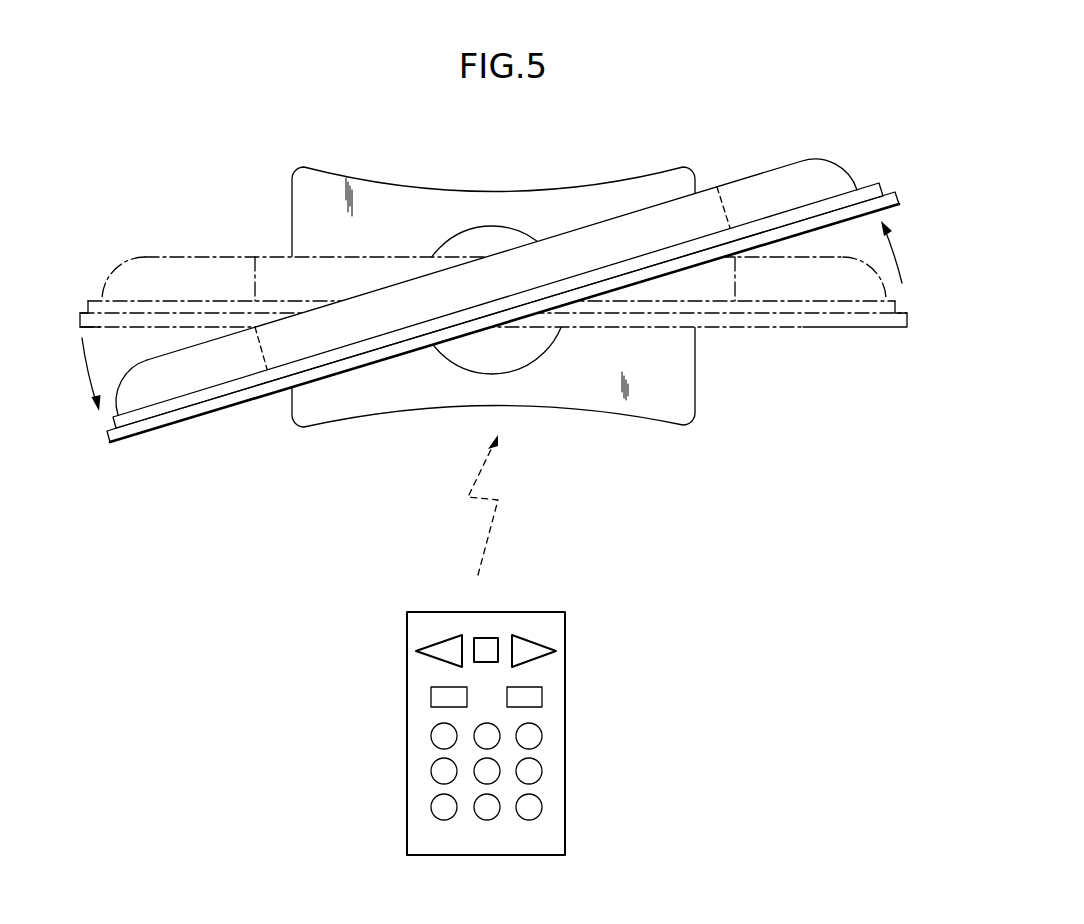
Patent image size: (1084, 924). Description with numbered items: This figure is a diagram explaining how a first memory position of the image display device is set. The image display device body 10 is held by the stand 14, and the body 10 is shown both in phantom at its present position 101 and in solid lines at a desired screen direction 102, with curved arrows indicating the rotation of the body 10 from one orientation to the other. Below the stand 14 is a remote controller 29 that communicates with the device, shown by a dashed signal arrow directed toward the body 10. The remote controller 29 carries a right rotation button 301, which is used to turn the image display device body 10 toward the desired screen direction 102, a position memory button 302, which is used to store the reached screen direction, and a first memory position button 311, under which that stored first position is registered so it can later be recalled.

The image display device body 10 is at (572, 260).
The stand 14 is at (660, 412).
The remote controller 29 is at (565, 755).
The present position 101 is at (825, 328).
The desired screen direction 102 is at (785, 166).
The right rotation button 301 is at (537, 643).
The position memory button 302 is at (486, 637).
The memory position 1 button 311 is at (431, 695).